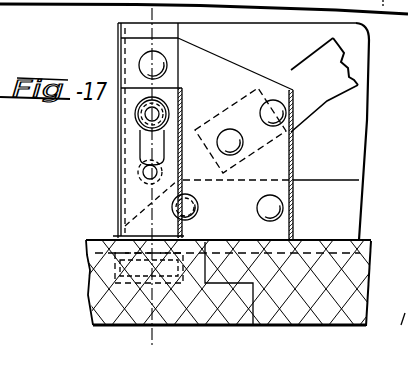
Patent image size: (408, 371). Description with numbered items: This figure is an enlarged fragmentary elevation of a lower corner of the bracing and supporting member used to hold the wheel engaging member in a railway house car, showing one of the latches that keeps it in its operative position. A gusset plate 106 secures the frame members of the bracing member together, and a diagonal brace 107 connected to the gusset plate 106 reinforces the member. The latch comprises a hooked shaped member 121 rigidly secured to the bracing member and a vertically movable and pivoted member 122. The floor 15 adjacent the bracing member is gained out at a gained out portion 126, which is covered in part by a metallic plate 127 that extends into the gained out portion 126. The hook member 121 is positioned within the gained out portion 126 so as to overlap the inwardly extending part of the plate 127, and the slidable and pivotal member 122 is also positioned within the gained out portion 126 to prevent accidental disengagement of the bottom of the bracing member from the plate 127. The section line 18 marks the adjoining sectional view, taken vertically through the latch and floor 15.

The floor 15 is at (105, 314).
The roof structure 18 is at (152, 8).
The gusset plates 106 is at (232, 80).
The diagonal brace 107 is at (328, 86).
The hooked shaped member 121 is at (194, 197).
The vertically movable and pivoted member 122 is at (133, 197).
The gained out portion 126 is at (97, 276).
The metallic plate 127 is at (372, 242).